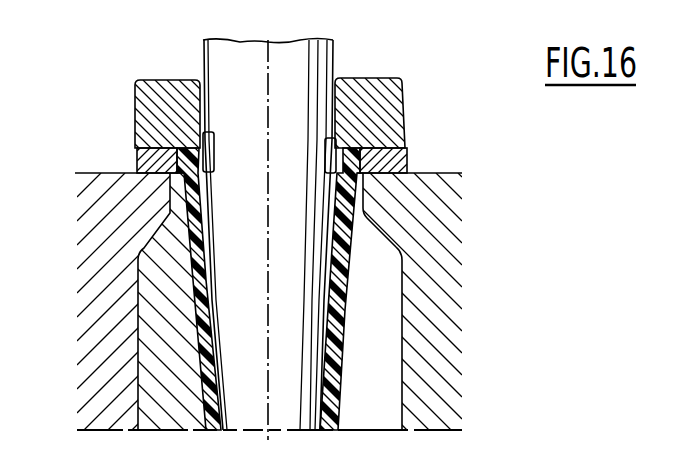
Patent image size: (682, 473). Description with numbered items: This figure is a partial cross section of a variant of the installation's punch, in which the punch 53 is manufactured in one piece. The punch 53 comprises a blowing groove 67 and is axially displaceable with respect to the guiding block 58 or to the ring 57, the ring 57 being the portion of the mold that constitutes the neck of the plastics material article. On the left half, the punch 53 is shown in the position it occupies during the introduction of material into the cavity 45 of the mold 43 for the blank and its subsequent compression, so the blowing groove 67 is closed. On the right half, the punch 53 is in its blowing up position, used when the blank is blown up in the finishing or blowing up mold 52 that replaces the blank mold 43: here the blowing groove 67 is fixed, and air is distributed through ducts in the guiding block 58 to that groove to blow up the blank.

The mold for the blank 43 is at (140, 253).
The cavity of the mold 45 is at (196, 363).
The finishing or blowing up mold 52 is at (388, 291).
The punch 53 is at (268, 240).
The ring 57 is at (137, 160).
The guiding block 58 is at (153, 87).
The blowing groove 67 is at (212, 152).